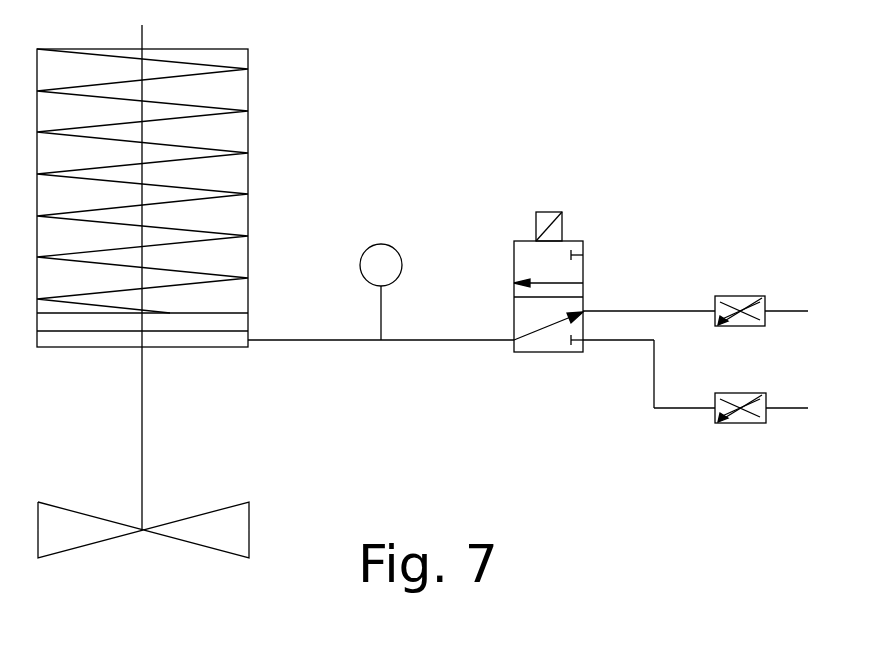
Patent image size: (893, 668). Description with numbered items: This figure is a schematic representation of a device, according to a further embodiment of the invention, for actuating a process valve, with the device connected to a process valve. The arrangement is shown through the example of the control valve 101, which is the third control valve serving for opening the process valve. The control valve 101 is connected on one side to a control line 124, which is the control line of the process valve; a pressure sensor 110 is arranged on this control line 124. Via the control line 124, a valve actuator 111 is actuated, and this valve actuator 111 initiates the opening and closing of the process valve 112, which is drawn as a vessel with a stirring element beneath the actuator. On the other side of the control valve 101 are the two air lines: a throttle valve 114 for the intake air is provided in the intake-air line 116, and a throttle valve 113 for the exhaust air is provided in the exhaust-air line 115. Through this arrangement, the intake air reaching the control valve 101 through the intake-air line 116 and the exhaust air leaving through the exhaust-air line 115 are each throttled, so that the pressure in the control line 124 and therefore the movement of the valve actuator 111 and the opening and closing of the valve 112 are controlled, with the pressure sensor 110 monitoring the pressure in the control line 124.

The control valve 101 is at (532, 267).
The pressure sensor 110 is at (377, 250).
The valve actuator 111 is at (218, 99).
The valve 112 is at (230, 525).
The throttle exhaust air 113 is at (723, 300).
The throttle intake air 114 is at (740, 418).
The exhaust-air line 115 is at (802, 308).
The intake-air line 116 is at (803, 408).
The control line 124 is at (488, 337).